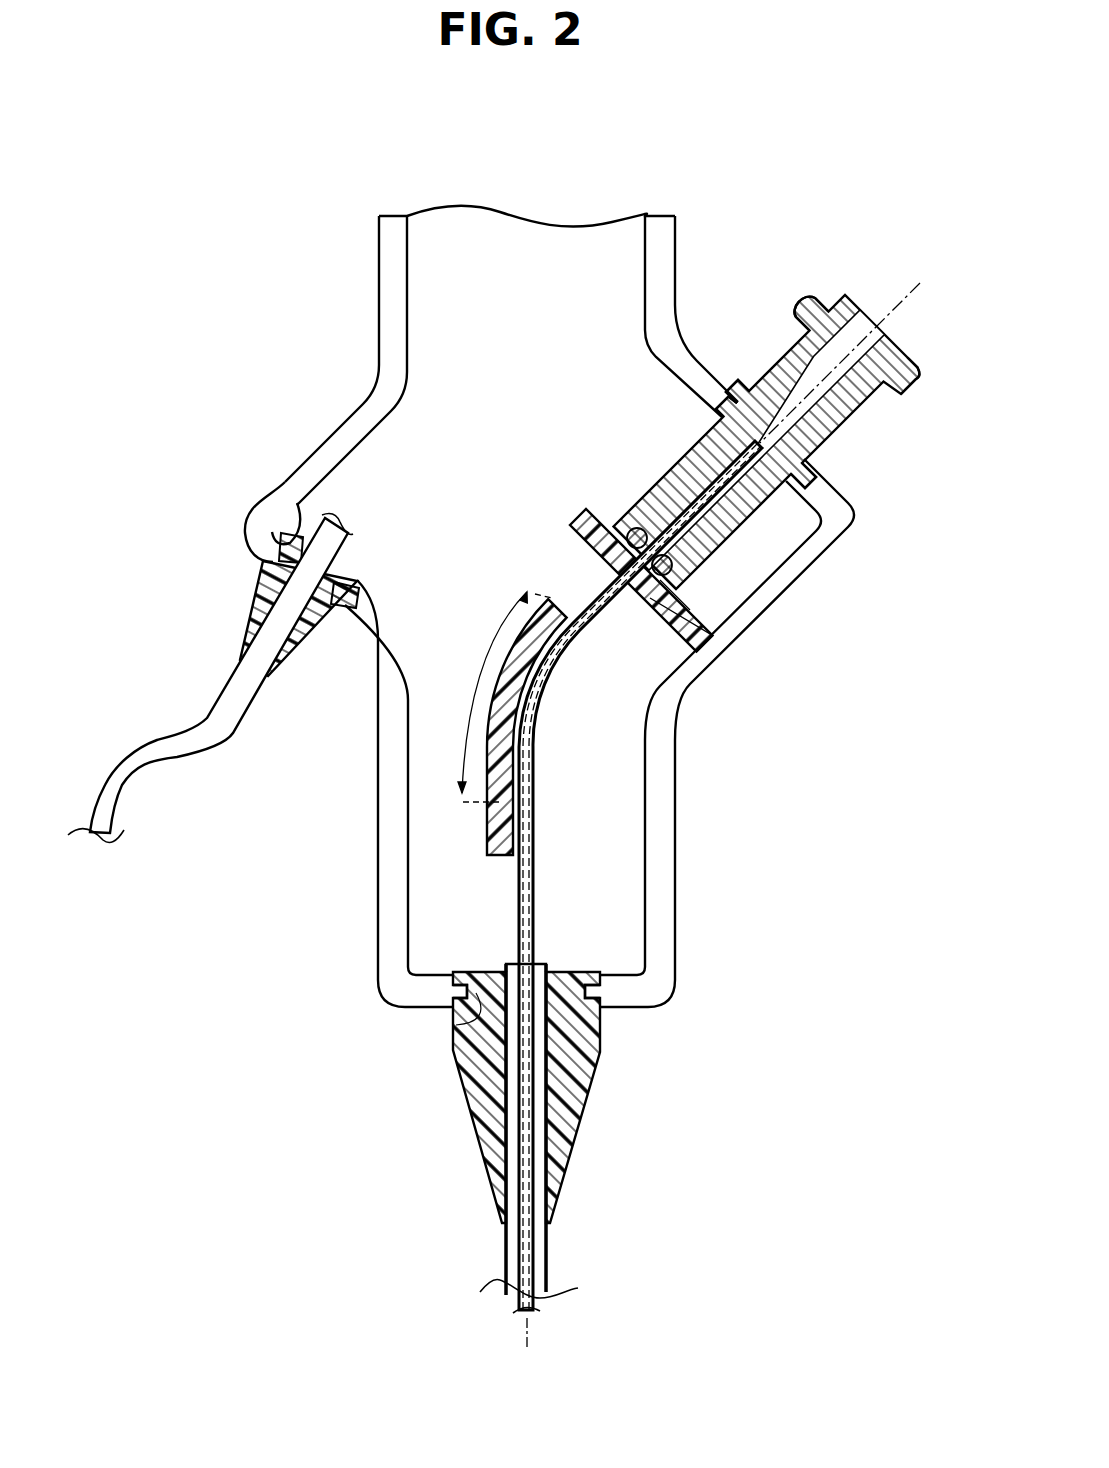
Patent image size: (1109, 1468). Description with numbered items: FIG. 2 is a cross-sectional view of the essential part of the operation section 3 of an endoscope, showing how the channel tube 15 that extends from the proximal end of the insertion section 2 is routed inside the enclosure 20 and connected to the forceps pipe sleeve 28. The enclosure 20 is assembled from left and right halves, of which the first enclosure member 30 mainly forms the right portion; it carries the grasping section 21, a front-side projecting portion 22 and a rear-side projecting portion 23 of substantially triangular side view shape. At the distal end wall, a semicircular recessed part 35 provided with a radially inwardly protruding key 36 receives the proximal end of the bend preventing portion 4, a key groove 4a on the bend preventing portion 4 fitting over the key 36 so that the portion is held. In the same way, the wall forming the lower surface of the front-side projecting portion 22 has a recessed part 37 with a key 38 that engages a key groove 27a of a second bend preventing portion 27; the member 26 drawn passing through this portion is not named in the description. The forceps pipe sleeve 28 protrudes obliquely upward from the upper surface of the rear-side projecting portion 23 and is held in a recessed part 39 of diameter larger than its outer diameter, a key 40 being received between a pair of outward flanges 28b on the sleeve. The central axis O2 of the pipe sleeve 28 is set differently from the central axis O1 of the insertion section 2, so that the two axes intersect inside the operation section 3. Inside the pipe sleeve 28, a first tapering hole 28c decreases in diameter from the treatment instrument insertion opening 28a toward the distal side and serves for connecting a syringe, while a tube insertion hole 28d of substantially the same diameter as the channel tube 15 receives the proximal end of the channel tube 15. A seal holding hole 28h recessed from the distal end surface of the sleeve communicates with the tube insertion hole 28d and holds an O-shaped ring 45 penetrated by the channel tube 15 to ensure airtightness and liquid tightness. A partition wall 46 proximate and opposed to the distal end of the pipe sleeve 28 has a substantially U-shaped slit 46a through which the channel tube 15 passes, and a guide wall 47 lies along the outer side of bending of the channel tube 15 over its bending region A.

The insertion section 2 is at (552, 1258).
The operation section 3 is at (236, 341).
The bend preventing portion 4 is at (598, 1068).
The key groove 4a is at (592, 992).
The channel tube 15 is at (534, 880).
The enclosure 20 is at (350, 293).
The grasping section 21 is at (700, 257).
The front-side projecting portion 22 is at (248, 521).
The rear-side projecting portion 23 is at (862, 542).
The side tube 26 is at (205, 721).
The bend preventing portion 27 is at (243, 619).
The key groove 27a is at (345, 608).
The forceps pipe sleeve 28 is at (866, 426).
The treatment instrument insertion opening 28a is at (890, 333).
The outward flanges 28b is at (820, 492).
The first tapering hole 28c is at (905, 378).
The tube insertion hole 28d is at (667, 555).
The seal holding hole 28h is at (690, 590).
The first enclosure member 30 is at (678, 806).
The recessed parts 35 is at (453, 1030).
The keys 36 is at (470, 1035).
The recessed parts 37 is at (280, 519).
The keys 38 is at (292, 566).
The recessed parts 39 is at (733, 390).
The keys 40 is at (737, 400).
The O-shaped ring 45 is at (648, 543).
The partition wall 46 is at (716, 640).
The slit 46a is at (712, 640).
The guide wall 47 is at (487, 820).
The bending region A is at (501, 697).
The central axis O1 is at (527, 1350).
The central axis O2 is at (853, 355).